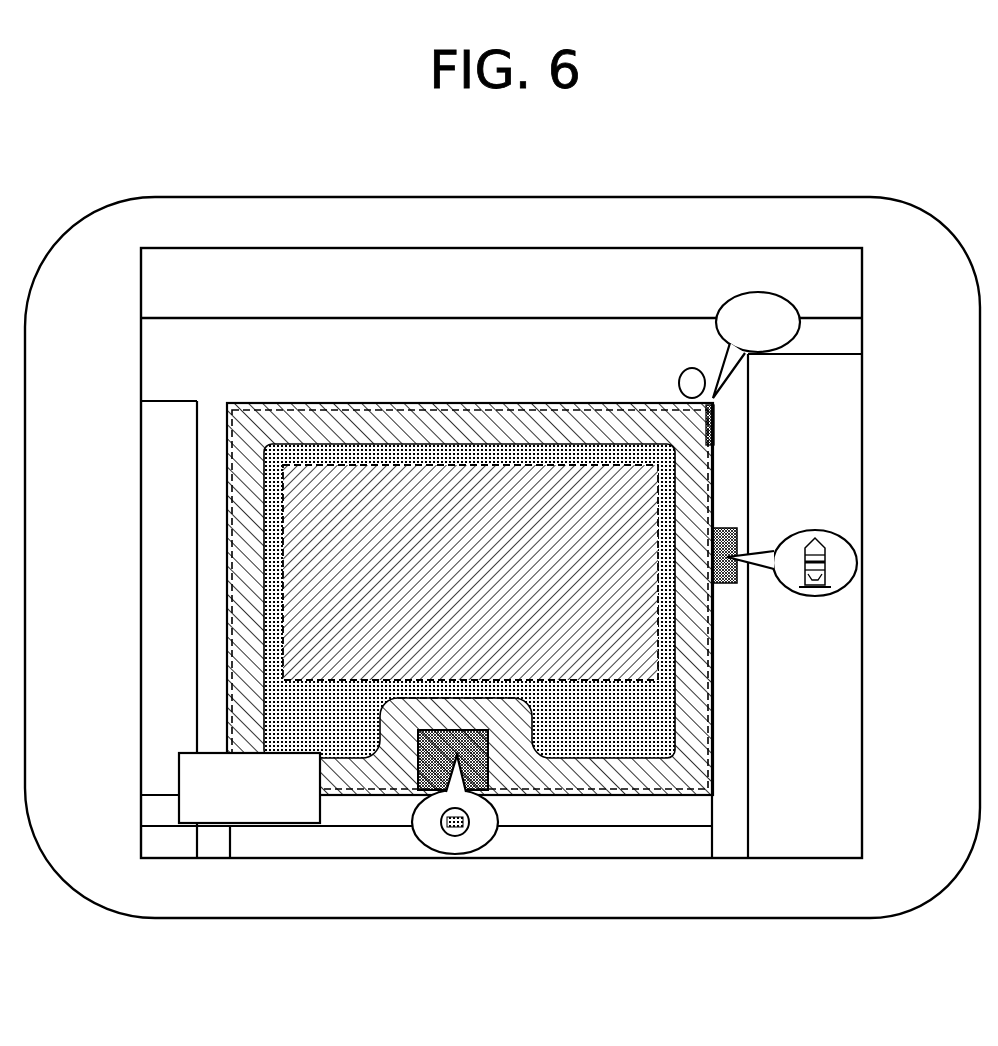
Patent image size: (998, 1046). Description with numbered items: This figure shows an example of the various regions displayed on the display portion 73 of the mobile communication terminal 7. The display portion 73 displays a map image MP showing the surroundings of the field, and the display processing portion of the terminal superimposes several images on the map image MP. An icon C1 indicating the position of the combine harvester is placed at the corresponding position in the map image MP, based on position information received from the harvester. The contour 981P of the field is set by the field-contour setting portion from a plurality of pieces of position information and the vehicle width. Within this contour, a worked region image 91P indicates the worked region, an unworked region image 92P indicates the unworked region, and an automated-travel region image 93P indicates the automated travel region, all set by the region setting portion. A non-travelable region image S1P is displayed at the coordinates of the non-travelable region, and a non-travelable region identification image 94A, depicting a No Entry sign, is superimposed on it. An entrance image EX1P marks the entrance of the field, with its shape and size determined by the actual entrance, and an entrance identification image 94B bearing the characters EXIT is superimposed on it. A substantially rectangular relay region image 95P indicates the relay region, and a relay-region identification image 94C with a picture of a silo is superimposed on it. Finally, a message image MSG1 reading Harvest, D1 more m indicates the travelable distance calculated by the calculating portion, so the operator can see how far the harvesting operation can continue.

The mobile communication terminal 7 is at (817, 197).
The display portion 73 is at (556, 553).
The map image MP is at (870, 338).
The entrance identification image 94B is at (741, 292).
The icon C1 is at (692, 368).
The contour 981P is at (400, 564).
The worked region image 91P is at (245, 580).
The unworked region image 92P is at (272, 615).
The automated-travel region image 93P is at (288, 649).
The non-travelable region image S1P is at (420, 758).
The entrance image EX1P is at (715, 410).
The relay region image 95P is at (728, 540).
The relay-region identification image 94C is at (857, 548).
The non-travelable region identification image 94A is at (488, 848).
The message image MSG1 is at (218, 824).